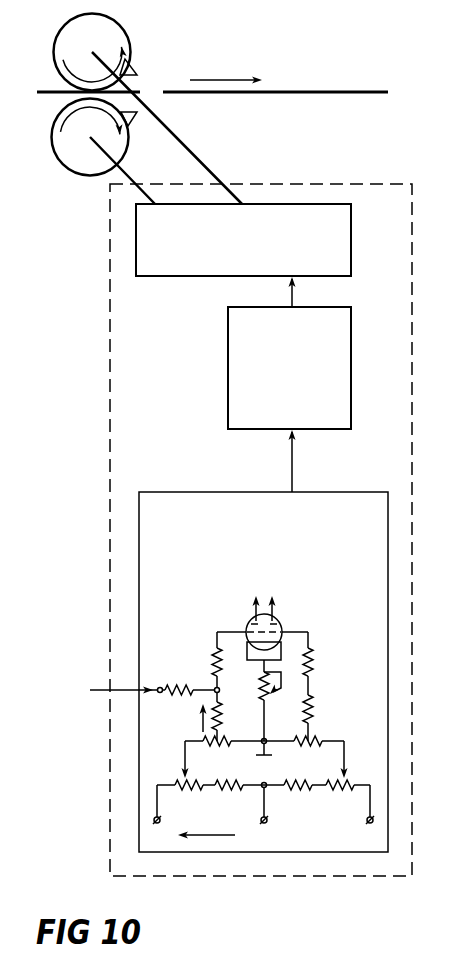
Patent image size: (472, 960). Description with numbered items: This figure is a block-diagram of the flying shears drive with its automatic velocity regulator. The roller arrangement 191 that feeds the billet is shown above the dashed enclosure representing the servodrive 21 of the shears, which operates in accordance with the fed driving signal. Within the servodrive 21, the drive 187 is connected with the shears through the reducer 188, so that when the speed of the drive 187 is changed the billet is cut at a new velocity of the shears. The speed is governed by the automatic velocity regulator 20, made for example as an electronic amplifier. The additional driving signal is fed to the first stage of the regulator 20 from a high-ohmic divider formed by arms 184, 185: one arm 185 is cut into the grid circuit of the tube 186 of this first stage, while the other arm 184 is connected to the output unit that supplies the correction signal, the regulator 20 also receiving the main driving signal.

The roller pair 191 is at (147, 109).
The reducer 188 is at (243, 240).
The drive 187 is at (289, 368).
The automatic velocity regulator 20 is at (170, 498).
The drive of shears 21 is at (117, 818).
The tube 186 is at (280, 628).
The divider arm 184 is at (189, 678).
The divider arm 185 is at (233, 716).